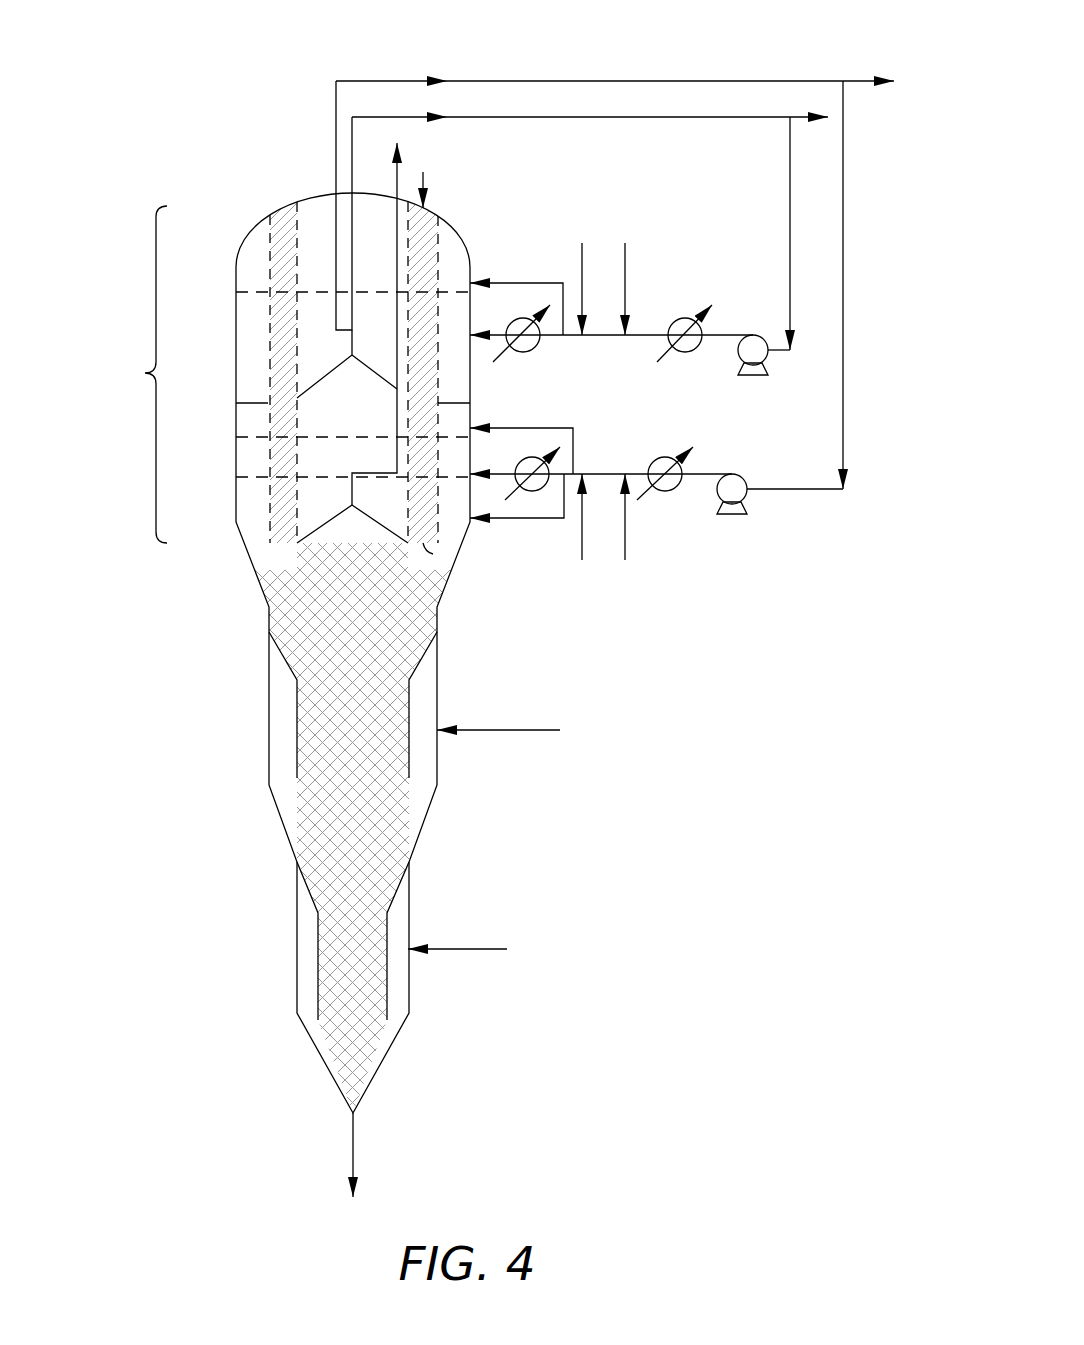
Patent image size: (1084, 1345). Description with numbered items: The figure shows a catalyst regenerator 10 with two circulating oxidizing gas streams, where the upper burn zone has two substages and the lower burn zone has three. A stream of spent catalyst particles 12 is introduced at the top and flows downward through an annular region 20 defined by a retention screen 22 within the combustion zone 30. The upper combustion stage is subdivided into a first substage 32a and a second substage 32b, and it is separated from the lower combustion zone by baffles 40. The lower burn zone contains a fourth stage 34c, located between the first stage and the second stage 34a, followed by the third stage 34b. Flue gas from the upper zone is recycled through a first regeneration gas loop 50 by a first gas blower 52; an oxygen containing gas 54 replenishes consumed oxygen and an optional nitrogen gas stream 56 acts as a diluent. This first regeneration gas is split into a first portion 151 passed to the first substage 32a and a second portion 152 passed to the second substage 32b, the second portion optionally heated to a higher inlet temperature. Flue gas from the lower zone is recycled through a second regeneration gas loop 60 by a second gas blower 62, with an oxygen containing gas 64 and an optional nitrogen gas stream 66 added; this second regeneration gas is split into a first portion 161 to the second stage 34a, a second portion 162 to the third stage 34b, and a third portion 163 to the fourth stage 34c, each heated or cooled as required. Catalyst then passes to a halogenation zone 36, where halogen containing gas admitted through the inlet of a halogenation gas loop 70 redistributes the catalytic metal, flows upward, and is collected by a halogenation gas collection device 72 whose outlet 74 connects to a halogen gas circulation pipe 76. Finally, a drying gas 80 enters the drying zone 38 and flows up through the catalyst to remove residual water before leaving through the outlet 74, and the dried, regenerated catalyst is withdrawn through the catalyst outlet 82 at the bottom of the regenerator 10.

The regenerator 10 is at (171, 67).
The stream of spent catalyst particles 12 is at (283, 208).
The annular region 20 is at (283, 323).
The retention screen 22 is at (268, 278).
The combustion zone 30 is at (143, 373).
The first substage 32a is at (362, 205).
The second substage 32b is at (347, 349).
The second stage 34a is at (353, 458).
The third stage 34b is at (352, 510).
The fourth stage 34c is at (353, 418).
The halogenation zone 36 is at (348, 695).
The drying zone 38 is at (352, 930).
The baffles 40 is at (245, 403).
The first regeneration gas loop 50 is at (618, 117).
The first gas blower 52 is at (753, 326).
The oxygen containing gas 54 is at (625, 243).
The nitrogen gas stream 56 is at (582, 243).
The second regeneration gas loop 60 is at (608, 81).
The second gas blower 62 is at (732, 467).
The oxygen containing gas 64 is at (625, 560).
The nitrogen gas stream 66 is at (582, 560).
The halogenation gas loop 70 is at (538, 730).
The halogenation gas collection device 72 is at (317, 525).
The outlet 74 is at (355, 507).
The halogen gas circulation pipe 76 is at (402, 165).
The drying gas 80 is at (477, 949).
The catalyst outlet 82 is at (353, 1113).
The first portion 151 is at (522, 283).
The second portion 152 is at (495, 335).
The first portion 161 is at (503, 474).
The second portion 162 is at (547, 523).
The third portion 163 is at (573, 428).